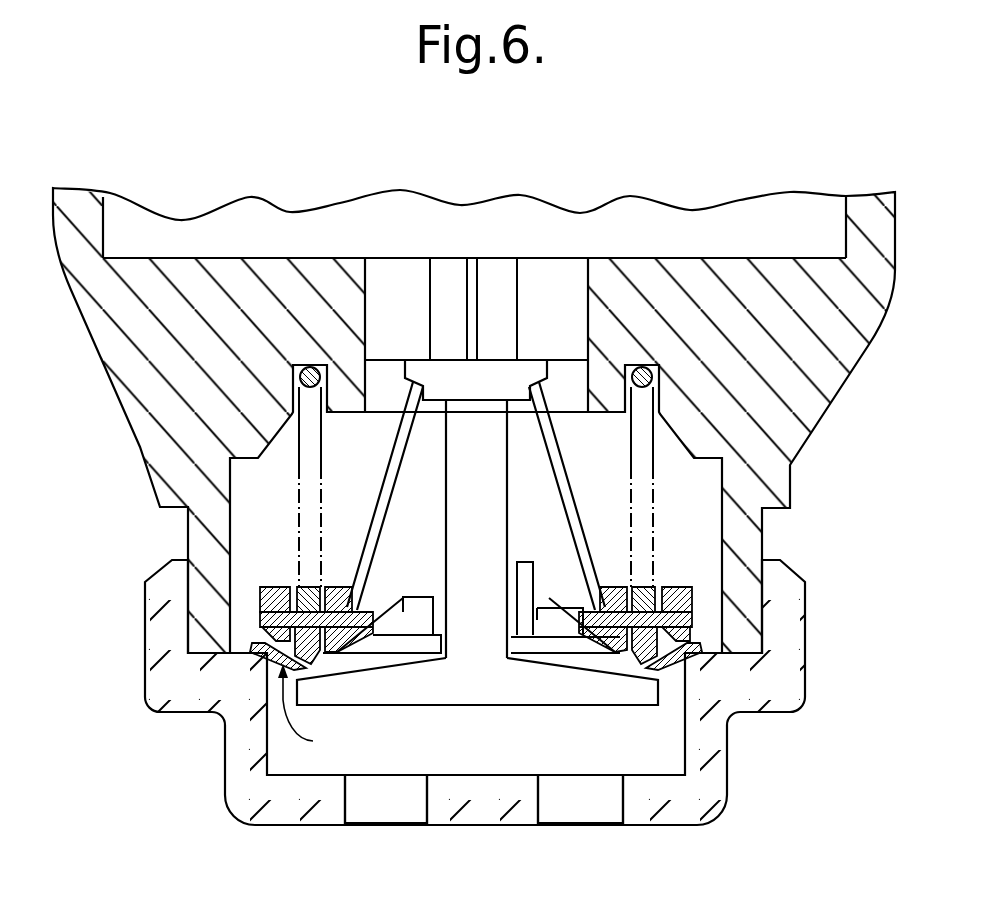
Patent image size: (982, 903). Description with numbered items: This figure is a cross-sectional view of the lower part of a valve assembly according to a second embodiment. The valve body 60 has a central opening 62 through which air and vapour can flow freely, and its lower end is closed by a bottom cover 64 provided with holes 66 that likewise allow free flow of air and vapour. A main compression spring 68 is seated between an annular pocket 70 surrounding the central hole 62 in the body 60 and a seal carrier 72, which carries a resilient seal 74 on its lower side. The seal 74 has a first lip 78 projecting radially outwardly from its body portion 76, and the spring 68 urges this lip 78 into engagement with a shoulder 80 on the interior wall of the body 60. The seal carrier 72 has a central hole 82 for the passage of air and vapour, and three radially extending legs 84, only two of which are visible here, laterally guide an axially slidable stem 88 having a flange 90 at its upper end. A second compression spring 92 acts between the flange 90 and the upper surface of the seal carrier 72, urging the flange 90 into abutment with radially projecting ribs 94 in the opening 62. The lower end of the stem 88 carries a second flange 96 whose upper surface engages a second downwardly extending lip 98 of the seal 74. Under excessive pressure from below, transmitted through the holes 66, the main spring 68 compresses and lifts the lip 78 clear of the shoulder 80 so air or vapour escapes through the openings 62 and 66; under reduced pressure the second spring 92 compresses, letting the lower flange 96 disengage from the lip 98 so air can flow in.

The valve body 60 is at (150, 392).
The central opening 62 is at (461, 285).
The bottom cover 64 is at (277, 795).
The holes 66 is at (562, 805).
The main compression spring 68 is at (642, 557).
The annular pocket 70 is at (638, 405).
The seal carrier 72 is at (270, 586).
The resilient seal 74 is at (317, 713).
The body portion 76 is at (608, 585).
The first lip 78 is at (693, 634).
The shoulder 80 is at (250, 650).
The central hole 82 is at (410, 598).
The radially extending legs 84 is at (548, 528).
The stem 88 is at (496, 524).
The flange 90 is at (522, 377).
The second compression spring 92 is at (382, 497).
The radially projecting ribs 94 is at (570, 285).
The second flange 96 is at (557, 686).
The second lip 98 is at (650, 668).